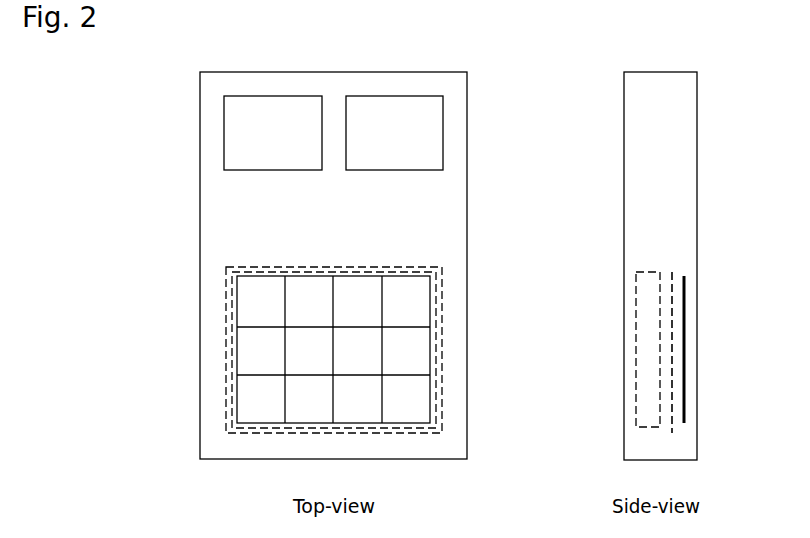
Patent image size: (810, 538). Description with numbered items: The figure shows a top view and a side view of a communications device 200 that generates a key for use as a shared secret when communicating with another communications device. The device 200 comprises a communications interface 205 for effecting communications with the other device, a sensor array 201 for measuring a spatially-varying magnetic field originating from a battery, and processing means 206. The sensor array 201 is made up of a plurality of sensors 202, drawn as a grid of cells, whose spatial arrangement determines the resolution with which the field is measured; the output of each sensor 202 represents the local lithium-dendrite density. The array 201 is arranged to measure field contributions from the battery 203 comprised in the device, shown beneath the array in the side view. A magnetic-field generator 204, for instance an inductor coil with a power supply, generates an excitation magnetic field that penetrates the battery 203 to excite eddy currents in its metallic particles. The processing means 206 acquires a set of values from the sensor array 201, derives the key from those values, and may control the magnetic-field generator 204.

The communications device 200 is at (443, 72).
The sensor array 201 is at (237, 327).
The sensor 202 is at (417, 313).
The battery 203 is at (232, 395).
The magnetic-field generator 204 is at (227, 272).
The communications interface 205 is at (224, 117).
The processing means 206 is at (443, 117).